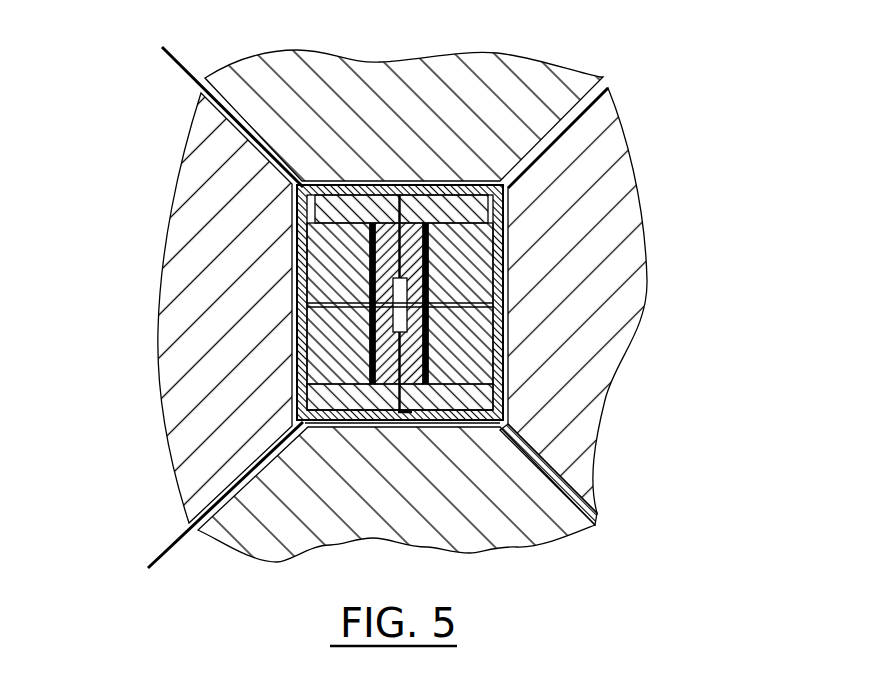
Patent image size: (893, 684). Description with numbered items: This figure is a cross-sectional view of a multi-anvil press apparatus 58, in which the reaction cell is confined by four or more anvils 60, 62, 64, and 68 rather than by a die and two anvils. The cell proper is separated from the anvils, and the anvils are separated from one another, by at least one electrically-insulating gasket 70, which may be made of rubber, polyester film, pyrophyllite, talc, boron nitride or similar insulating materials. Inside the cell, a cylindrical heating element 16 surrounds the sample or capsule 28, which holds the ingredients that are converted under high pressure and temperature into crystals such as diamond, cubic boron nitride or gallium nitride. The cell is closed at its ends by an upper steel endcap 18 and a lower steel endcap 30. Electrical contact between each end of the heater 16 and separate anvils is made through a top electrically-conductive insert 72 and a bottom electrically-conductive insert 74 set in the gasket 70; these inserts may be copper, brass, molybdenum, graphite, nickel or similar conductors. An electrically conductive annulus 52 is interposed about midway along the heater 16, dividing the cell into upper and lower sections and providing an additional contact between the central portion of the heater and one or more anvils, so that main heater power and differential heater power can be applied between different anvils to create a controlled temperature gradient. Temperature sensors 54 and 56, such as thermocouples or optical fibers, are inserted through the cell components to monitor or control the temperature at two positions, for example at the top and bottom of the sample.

The heating element 16 is at (428, 278).
The upper steel endcap 18 is at (449, 190).
The sample or capsule 28 is at (371, 268).
The lower steel endcap 30 is at (457, 423).
The electrically conductive annulus 52 is at (345, 288).
The temperature sensor 54 is at (178, 64).
The temperature sensor 56 is at (163, 562).
The multi-anvil press apparatus 58 is at (684, 89).
The anvil 60 is at (380, 72).
The anvil 62 is at (418, 532).
The anvil 64 is at (622, 317).
The anvil 68 is at (172, 376).
The electrically-insulating gasket 70 is at (460, 402).
The top electrically-conductive insert 72 is at (412, 187).
The bottom electrically-conductive insert 74 is at (407, 420).